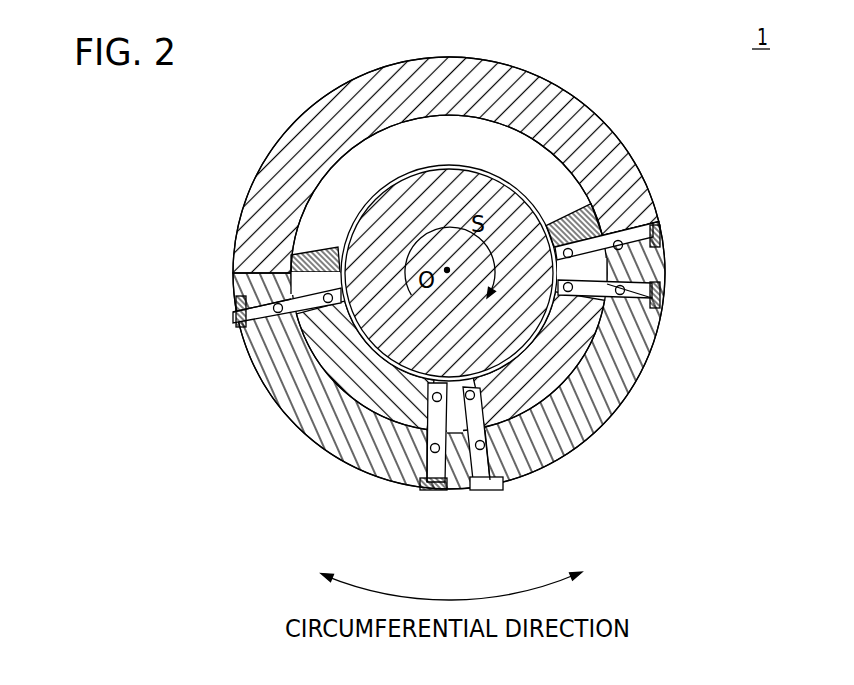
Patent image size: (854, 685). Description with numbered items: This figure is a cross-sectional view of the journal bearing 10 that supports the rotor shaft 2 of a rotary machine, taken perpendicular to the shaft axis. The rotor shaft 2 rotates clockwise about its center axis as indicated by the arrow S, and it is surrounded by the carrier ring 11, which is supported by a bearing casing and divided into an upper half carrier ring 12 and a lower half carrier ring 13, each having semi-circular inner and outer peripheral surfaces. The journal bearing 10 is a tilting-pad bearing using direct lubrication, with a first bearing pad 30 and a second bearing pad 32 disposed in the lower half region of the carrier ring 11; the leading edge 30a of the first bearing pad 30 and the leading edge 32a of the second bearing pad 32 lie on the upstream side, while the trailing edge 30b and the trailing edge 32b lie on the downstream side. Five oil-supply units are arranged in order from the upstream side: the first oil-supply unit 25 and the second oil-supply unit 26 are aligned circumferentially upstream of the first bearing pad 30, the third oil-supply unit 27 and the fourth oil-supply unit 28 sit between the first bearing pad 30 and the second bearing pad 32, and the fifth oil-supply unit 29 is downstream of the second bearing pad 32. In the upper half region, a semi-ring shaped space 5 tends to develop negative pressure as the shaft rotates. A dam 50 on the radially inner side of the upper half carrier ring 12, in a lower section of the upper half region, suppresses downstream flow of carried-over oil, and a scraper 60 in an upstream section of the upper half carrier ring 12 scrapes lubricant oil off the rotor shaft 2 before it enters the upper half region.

The rotor shaft 2 is at (436, 208).
The semi-ring shaped space 5 is at (358, 162).
The journal bearing 10 is at (605, 92).
The carrier ring 11 is at (406, 273).
The upper half carrier ring 12 is at (273, 165).
The lower half carrier ring 13 is at (290, 405).
The first oil-supply unit 25 is at (662, 235).
The second oil-supply unit 26 is at (662, 296).
The third oil-supply unit 27 is at (488, 492).
The fourth oil-supply unit 28 is at (436, 493).
The fifth oil-supply unit 29 is at (240, 312).
The first bearing pad 30 is at (550, 378).
The leading edge 30a is at (647, 328).
The trailing edge 30b is at (512, 470).
The second bearing pad 32 is at (372, 384).
The leading edge 32a is at (428, 473).
The trailing edge 32b is at (264, 328).
The dam 50 is at (598, 196).
The scraper 60 is at (290, 238).